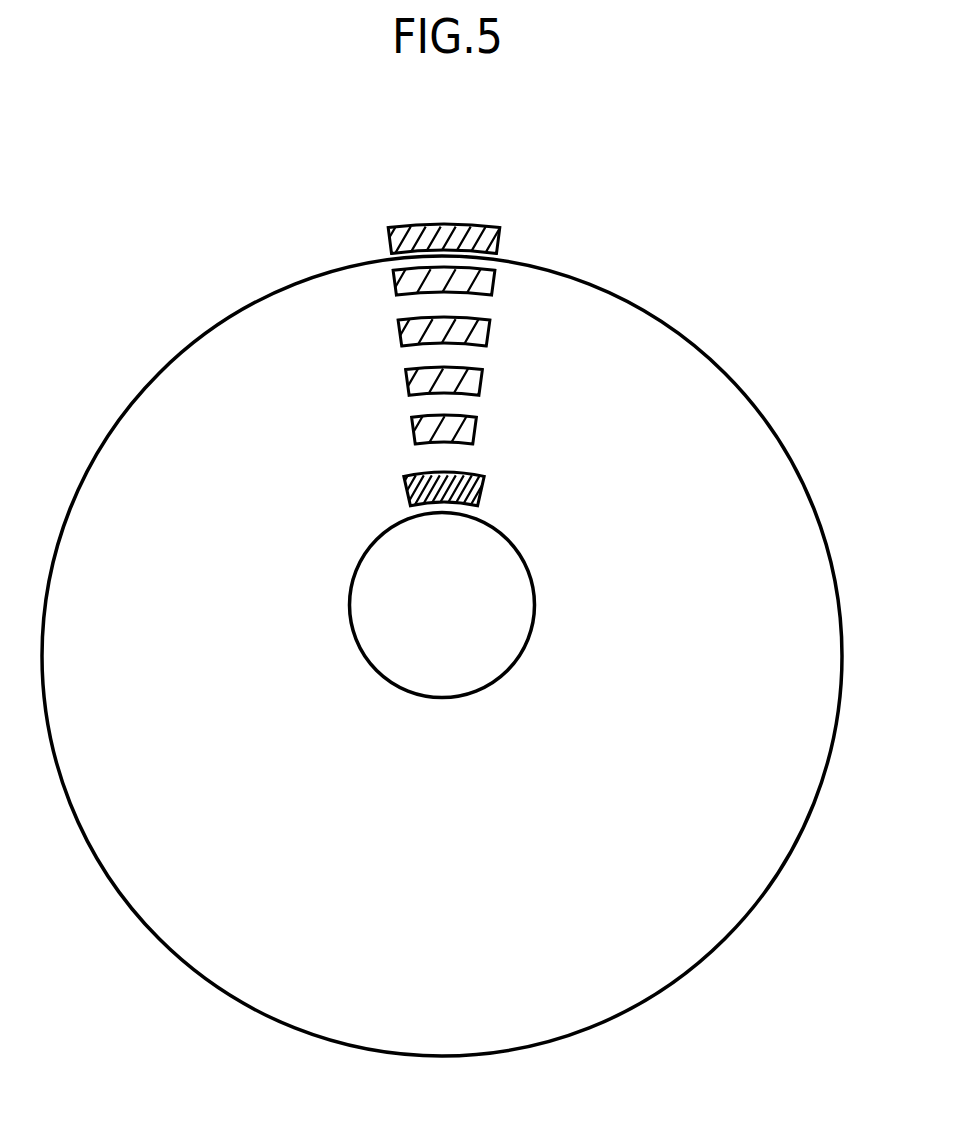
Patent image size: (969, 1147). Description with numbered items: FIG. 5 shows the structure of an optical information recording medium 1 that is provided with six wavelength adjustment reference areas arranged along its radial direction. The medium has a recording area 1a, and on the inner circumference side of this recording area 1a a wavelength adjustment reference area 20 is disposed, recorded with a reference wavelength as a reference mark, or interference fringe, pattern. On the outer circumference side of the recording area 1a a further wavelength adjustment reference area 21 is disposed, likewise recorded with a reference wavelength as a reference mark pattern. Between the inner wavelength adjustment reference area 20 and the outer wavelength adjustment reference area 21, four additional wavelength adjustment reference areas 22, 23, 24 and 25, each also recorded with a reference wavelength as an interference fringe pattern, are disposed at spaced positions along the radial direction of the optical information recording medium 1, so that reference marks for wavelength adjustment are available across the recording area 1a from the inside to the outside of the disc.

The optical information recording medium 1 is at (703, 368).
The recording area 1a is at (718, 780).
The wavelength adjustment reference area 20 is at (483, 493).
The wavelength adjustment reference area 21 is at (445, 224).
The wavelength adjustment reference area 22 is at (477, 432).
The wavelength adjustment reference area 23 is at (482, 381).
The wavelength adjustment reference area 24 is at (490, 333).
The wavelength adjustment reference area 25 is at (495, 287).